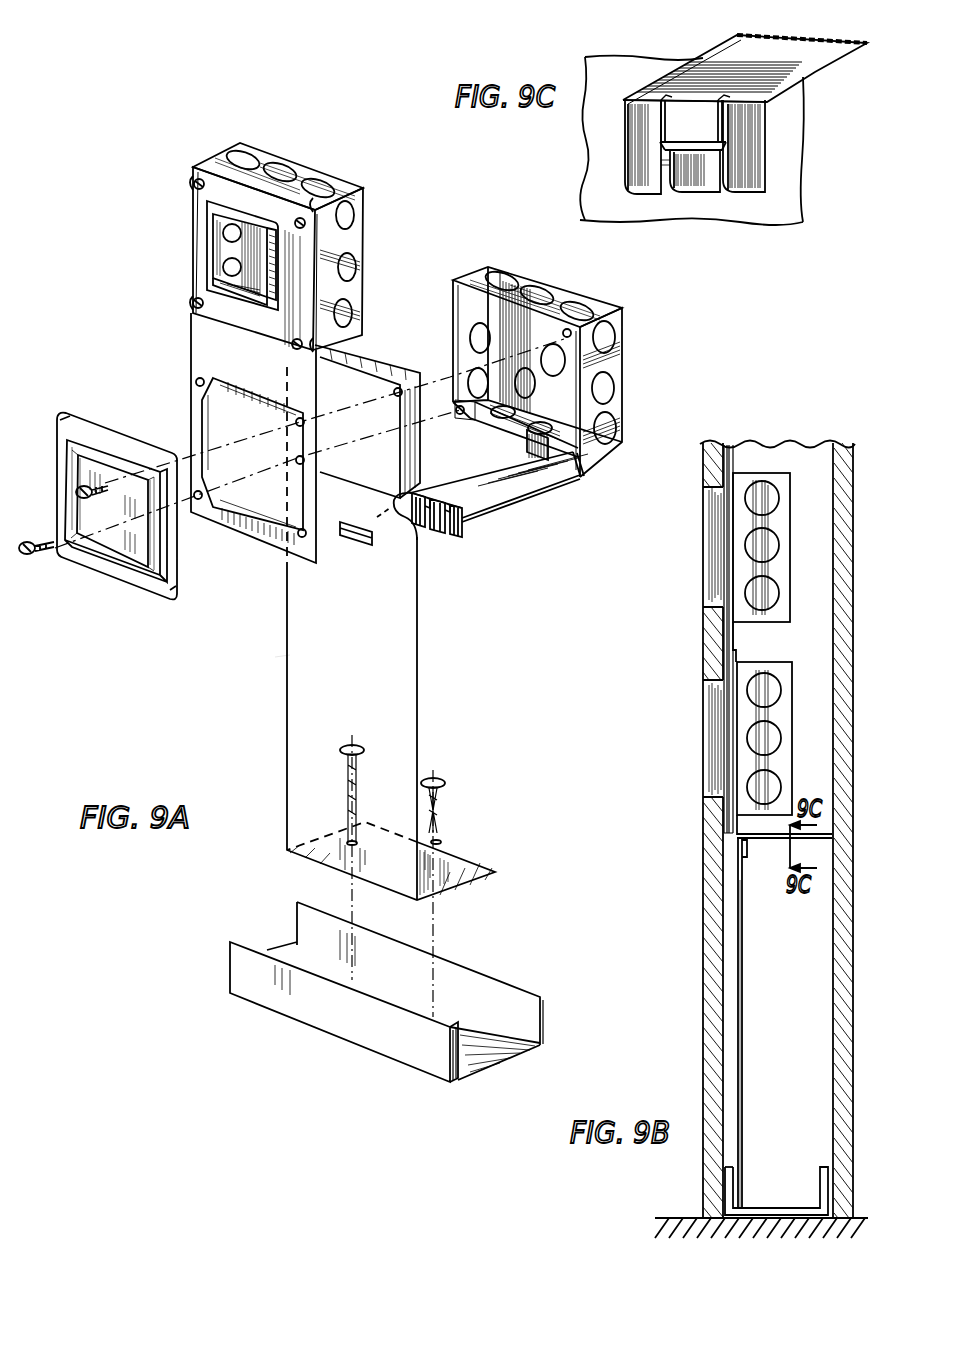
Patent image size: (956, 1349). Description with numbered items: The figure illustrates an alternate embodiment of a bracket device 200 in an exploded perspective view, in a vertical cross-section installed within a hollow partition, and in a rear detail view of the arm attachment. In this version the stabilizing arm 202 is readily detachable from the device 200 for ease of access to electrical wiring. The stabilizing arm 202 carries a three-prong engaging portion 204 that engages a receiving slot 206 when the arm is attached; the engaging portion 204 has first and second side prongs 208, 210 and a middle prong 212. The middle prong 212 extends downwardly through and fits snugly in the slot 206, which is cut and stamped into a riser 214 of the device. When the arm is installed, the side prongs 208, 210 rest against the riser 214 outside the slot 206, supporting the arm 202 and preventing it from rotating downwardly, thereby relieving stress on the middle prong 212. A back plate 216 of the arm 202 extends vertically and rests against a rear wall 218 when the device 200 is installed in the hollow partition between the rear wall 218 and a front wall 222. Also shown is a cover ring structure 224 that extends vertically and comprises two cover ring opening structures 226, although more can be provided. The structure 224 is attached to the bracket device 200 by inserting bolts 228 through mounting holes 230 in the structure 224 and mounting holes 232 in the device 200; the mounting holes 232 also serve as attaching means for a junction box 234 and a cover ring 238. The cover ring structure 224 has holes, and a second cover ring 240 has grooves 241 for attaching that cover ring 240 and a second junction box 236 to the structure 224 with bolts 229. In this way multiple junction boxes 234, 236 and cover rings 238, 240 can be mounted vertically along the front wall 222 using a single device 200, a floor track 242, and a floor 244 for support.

In FIG. 9A, the bracket device 200 is at (276, 657).
In FIG. 9C, the bracket device 200 is at (795, 223).
In FIG. 9B, the bracket device 200 is at (750, 982).
In FIG. 9A, the stabilizing arm 202 is at (537, 478).
In FIG. 9C, the stabilizing arm 202 is at (712, 45).
In FIG. 9A, the three-prong engaging portion 204 is at (463, 537).
In FIG. 9C, the three-prong engaging portion 204 is at (627, 112).
In FIG. 9A, the receiving slot 206 is at (350, 545).
In FIG. 9C, the receiving slot 206 is at (668, 195).
In FIG. 9A, the first side prong 208 is at (463, 520).
In FIG. 9C, the first side prong 208 is at (668, 148).
In FIG. 9A, the second side prong 210 is at (400, 515).
In FIG. 9C, the second side prong 210 is at (766, 153).
In FIG. 9A, the middle prong 212 is at (436, 540).
In FIG. 9C, the middle prong 212 is at (710, 193).
In FIG. 9C, the riser 214 is at (600, 174).
In FIG. 9B, the riser 214 is at (742, 1065).
In FIG. 9A, the back plate 216 is at (577, 480).
In FIG. 9B, the back plate 216 is at (834, 803).
In FIG. 9B, the rear wall 218 is at (833, 1107).
In FIG. 9B, the front wall 222 is at (703, 982).
In FIG. 9A, the cover ring structure 224 is at (270, 383).
In FIG. 9A, the cover ring opening structure 226 is at (200, 164).
In FIG. 9A, the bolt 228 is at (77, 520).
In FIG. 9A, the bolt 229 is at (317, 207).
In FIG. 9A, the mounting hole 230 is at (200, 380).
In FIG. 9A, the mounting hole 232 is at (400, 388).
In FIG. 9A, the junction box 234 is at (583, 296).
In FIG. 9B, the junction box 234 is at (776, 662).
In FIG. 9A, the junction box 236 is at (272, 163).
In FIG. 9B, the junction box 236 is at (768, 473).
In FIG. 9A, the cover ring 238 is at (80, 425).
In FIG. 9B, the cover ring 238 is at (708, 758).
In FIG. 9A, the cover ring 240 is at (225, 165).
In FIG. 9B, the cover ring 240 is at (703, 549).
In FIG. 9A, the groove 241 is at (194, 189).
In FIG. 9A, the floor track 242 is at (298, 1012).
In FIG. 9B, the floor track 242 is at (763, 1216).
In FIG. 9B, the floor 244 is at (676, 1218).